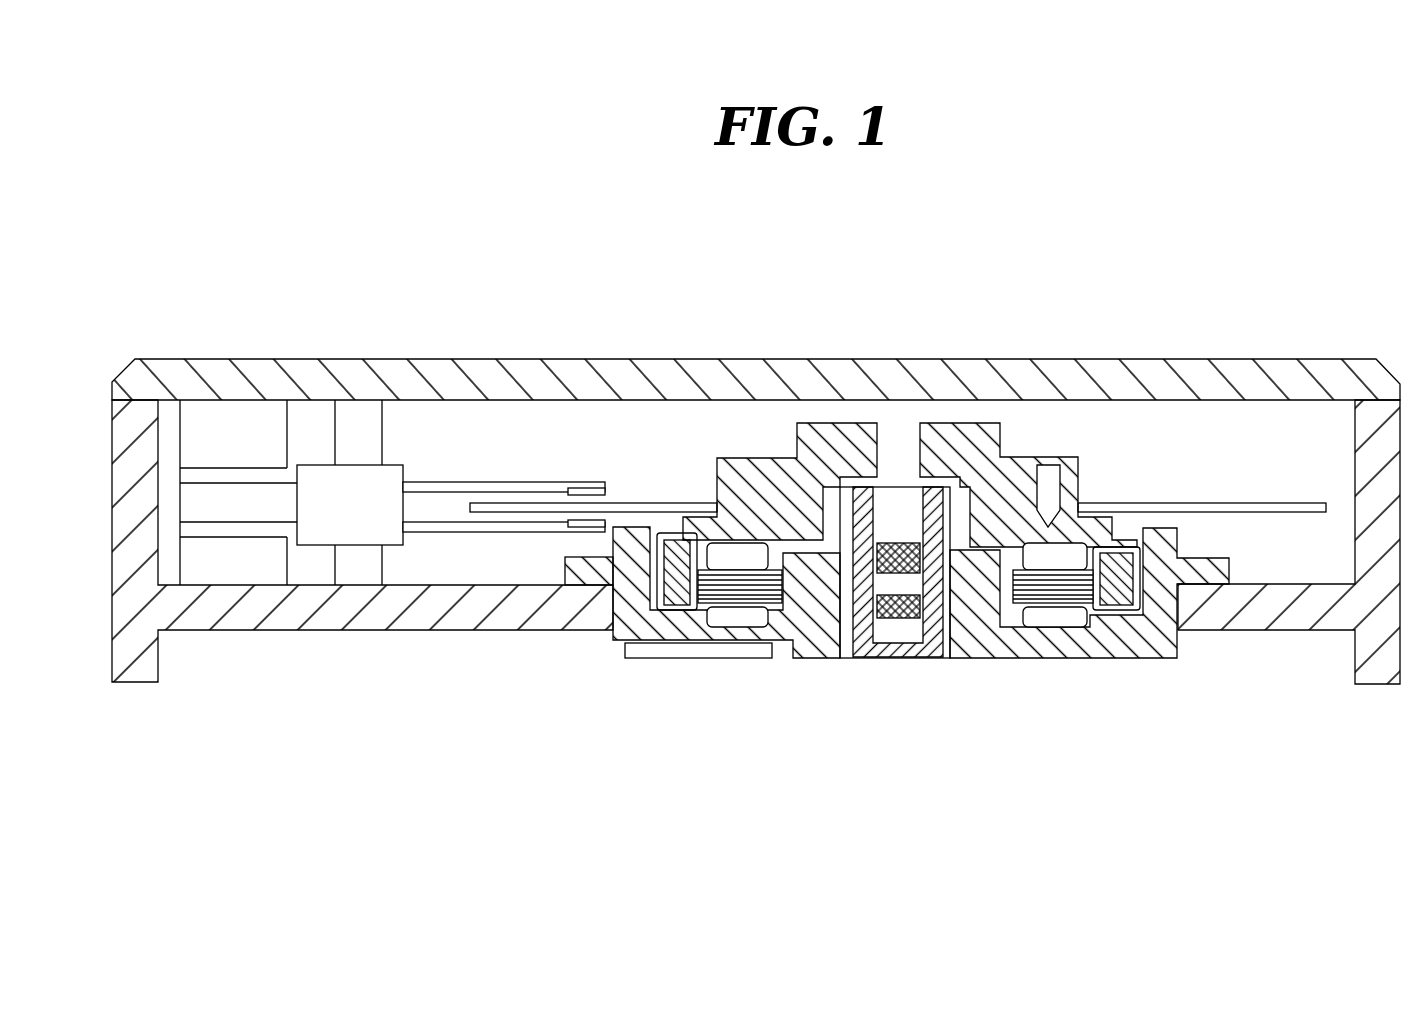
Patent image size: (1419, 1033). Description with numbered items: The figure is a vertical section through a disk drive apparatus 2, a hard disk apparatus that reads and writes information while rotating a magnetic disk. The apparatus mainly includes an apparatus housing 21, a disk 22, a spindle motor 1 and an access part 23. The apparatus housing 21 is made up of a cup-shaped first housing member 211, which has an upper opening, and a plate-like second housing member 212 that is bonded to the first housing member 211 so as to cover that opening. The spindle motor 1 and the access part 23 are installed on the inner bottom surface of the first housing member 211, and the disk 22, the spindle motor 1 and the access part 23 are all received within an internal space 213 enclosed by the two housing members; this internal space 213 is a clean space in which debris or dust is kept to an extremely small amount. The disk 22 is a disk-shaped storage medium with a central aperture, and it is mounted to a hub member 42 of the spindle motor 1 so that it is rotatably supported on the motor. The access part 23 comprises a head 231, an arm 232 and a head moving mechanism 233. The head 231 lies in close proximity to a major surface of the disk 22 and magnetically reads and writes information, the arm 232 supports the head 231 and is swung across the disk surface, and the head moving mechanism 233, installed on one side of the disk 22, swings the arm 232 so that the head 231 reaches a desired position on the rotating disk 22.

The spindle motor 1 is at (1017, 695).
The disk drive apparatus 2 is at (241, 256).
The apparatus housing 21 is at (1117, 288).
The first housing member 211 is at (1363, 466).
The second housing member 212 is at (1221, 371).
The internal space 213 is at (1163, 436).
The disk 22 is at (1290, 516).
The access part 23 is at (578, 693).
The head 231 is at (567, 529).
The arm 232 is at (470, 530).
The head moving mechanism 233 is at (380, 525).
The hub member 42 is at (717, 478).